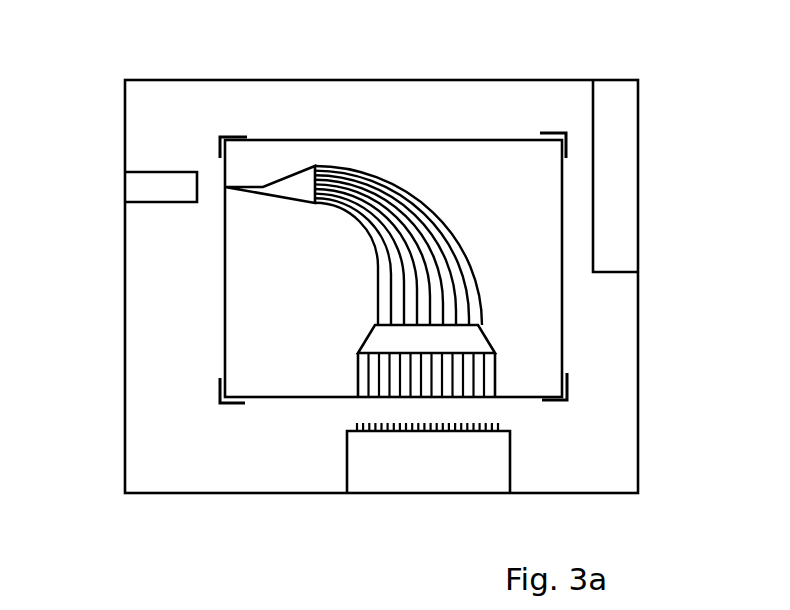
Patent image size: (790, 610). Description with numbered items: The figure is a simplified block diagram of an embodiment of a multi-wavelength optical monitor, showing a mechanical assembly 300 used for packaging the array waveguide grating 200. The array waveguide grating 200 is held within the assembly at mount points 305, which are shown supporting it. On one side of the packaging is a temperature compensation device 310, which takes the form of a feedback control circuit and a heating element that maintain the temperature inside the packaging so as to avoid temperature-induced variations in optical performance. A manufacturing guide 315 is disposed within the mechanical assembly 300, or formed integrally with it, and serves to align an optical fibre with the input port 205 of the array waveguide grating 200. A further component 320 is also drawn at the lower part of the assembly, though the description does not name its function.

The housing / enclosure 300 is at (137, 115).
The mounting brackets 305 is at (228, 135).
The optical fiber / light guide 205 is at (225, 187).
The optical module 200 is at (343, 150).
The power supply / side unit 310 is at (623, 207).
The connector port 315 is at (137, 193).
The connector / electronics board 320 is at (370, 478).